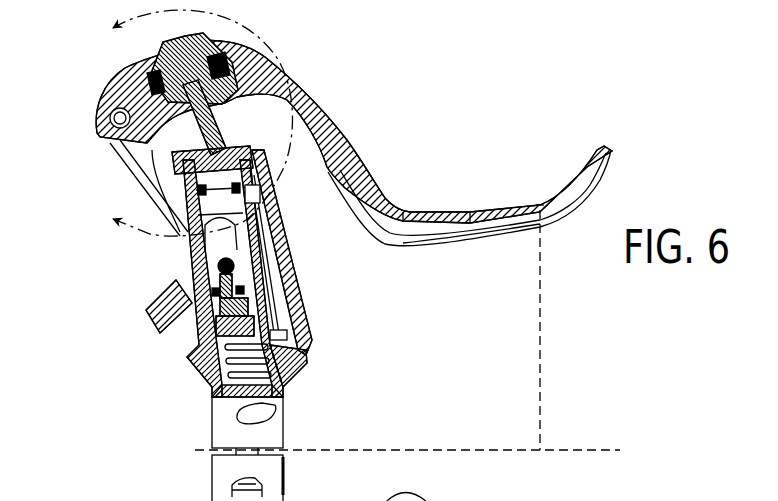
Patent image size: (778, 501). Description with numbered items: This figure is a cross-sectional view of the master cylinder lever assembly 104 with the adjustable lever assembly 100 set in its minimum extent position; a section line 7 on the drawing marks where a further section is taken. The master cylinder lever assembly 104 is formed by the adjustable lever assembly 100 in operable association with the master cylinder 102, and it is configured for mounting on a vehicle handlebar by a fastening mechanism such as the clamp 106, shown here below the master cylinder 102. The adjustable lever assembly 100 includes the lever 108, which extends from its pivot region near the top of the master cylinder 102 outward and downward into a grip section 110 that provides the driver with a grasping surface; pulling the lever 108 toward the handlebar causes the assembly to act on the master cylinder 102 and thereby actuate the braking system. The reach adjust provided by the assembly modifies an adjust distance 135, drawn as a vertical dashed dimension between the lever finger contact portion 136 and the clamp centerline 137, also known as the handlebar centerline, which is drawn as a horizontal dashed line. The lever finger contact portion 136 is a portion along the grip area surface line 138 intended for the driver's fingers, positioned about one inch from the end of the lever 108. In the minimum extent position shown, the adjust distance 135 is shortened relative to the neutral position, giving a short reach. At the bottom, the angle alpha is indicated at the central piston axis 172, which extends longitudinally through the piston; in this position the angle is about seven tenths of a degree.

The adjustable lever assembly 100 is at (105, 82).
The section line 7- 7 is at (195, 123).
The master cylinder 102 is at (185, 358).
The master cylinder lever assembly 104 is at (120, 248).
The clamp 106 is at (208, 426).
The lever 108 is at (330, 128).
The grip section 110 is at (433, 162).
The adjust distance 135 is at (540, 337).
The lever finger contact portion 136 is at (540, 207).
The clamp centerline 137 is at (362, 450).
The grip area surface line 138 is at (478, 200).
The central piston axis 172 is at (443, 489).